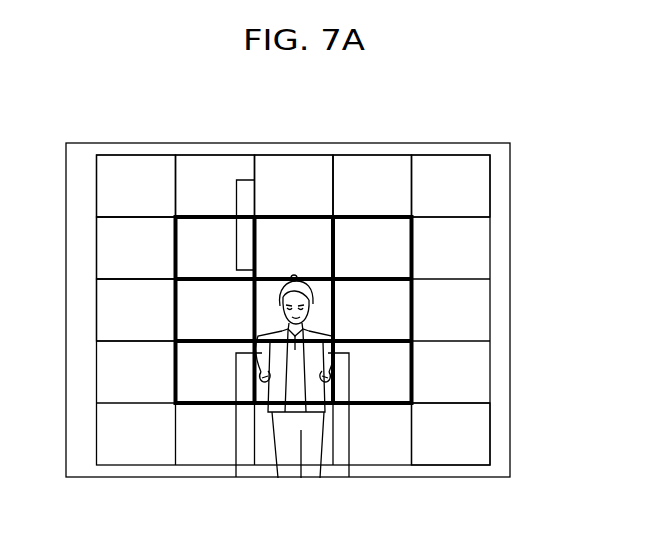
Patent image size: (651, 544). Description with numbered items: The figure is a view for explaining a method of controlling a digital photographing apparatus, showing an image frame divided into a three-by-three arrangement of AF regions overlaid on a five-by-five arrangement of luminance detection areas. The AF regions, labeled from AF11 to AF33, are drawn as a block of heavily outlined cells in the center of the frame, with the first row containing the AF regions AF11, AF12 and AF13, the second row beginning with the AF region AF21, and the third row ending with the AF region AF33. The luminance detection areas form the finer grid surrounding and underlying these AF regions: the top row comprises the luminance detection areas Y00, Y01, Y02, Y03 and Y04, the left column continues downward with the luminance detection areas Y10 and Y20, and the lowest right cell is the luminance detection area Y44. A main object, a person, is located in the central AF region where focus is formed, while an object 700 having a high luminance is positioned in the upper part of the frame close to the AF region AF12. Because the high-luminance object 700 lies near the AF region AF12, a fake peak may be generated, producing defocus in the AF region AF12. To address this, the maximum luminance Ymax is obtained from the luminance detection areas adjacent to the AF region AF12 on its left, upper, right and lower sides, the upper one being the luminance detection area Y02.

The object having a high luminance 700 is at (245, 180).
The luminance detection area Y00 is at (136, 186).
The luminance detection area Y01 is at (215, 186).
The luminance detection area Y02 is at (294, 186).
The luminance detection area Y03 is at (372, 186).
The luminance detection area Y04 is at (451, 186).
The luminance detection area Y10 is at (136, 248).
The luminance detection area Y20 is at (136, 310).
The luminance detection area Y44 is at (451, 434).
The AF region AF11 is at (215, 248).
The AF region AF12 is at (294, 248).
The AF region AF13 is at (372, 248).
The AF region AF21 is at (215, 310).
The AF region AF33 is at (372, 372).